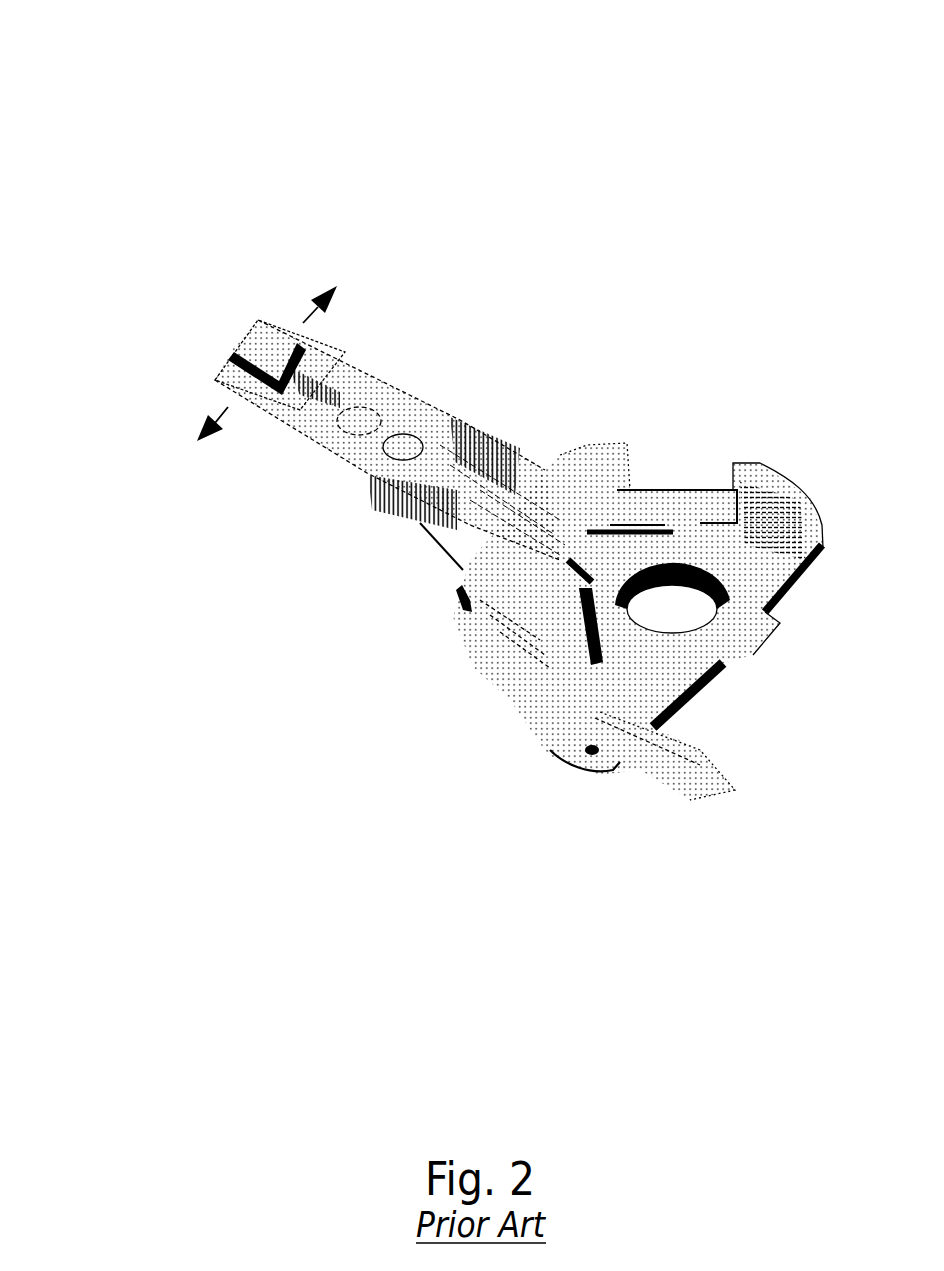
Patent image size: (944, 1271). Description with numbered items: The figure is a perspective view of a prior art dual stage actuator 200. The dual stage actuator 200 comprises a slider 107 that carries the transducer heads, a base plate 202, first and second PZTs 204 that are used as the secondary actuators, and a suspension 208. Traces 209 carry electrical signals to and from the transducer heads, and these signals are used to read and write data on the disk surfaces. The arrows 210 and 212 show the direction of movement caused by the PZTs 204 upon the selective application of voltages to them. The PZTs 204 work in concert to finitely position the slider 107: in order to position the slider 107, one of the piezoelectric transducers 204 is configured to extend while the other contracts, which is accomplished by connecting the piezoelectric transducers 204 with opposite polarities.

The dual stage actuator 200 is at (96, 88).
The slider 107 is at (255, 345).
The arrow 212 is at (304, 301).
The arrow 210 is at (205, 424).
The suspension 208 is at (456, 422).
The base plate 202 is at (800, 502).
The PZTs 204 is at (665, 497).
The traces 209 is at (663, 757).